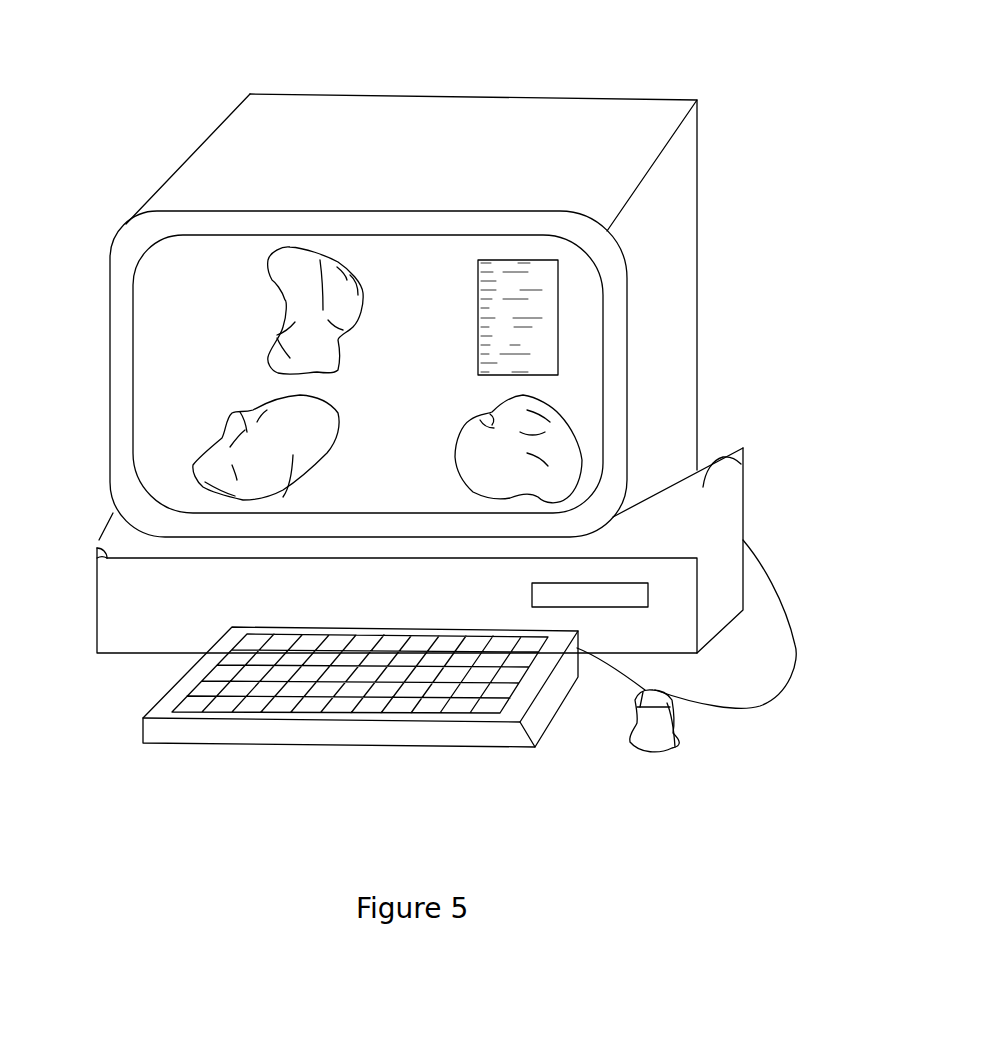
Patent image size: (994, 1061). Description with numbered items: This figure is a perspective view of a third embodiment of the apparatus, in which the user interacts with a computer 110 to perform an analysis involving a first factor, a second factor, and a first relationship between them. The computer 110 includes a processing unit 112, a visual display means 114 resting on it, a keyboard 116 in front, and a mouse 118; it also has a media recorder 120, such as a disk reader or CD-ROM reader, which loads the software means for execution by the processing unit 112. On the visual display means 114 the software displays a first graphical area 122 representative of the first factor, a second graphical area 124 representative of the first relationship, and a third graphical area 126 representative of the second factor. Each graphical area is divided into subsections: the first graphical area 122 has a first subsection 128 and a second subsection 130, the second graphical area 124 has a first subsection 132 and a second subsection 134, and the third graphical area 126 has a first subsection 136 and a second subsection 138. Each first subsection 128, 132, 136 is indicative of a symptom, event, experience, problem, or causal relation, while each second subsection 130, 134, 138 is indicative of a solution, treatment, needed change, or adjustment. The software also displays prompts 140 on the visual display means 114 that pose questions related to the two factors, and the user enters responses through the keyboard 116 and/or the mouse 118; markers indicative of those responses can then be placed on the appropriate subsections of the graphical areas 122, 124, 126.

The computer 110 is at (625, 83).
The processing unit 112 is at (758, 471).
The visual display means 114 is at (110, 343).
The keyboard 116 is at (385, 747).
The mouse 118 is at (675, 725).
The media recorder 120 is at (648, 592).
The first graphical area 122 is at (203, 450).
The second graphical area 124 is at (270, 282).
The third graphical area 126 is at (557, 427).
The first subsection 128 is at (205, 482).
The second subsection 130 is at (283, 497).
The first subsection 132 is at (277, 338).
The second subsection 134 is at (355, 280).
The first subsection 136 is at (527, 453).
The second subsection 138 is at (527, 410).
The prompts 140 is at (558, 312).